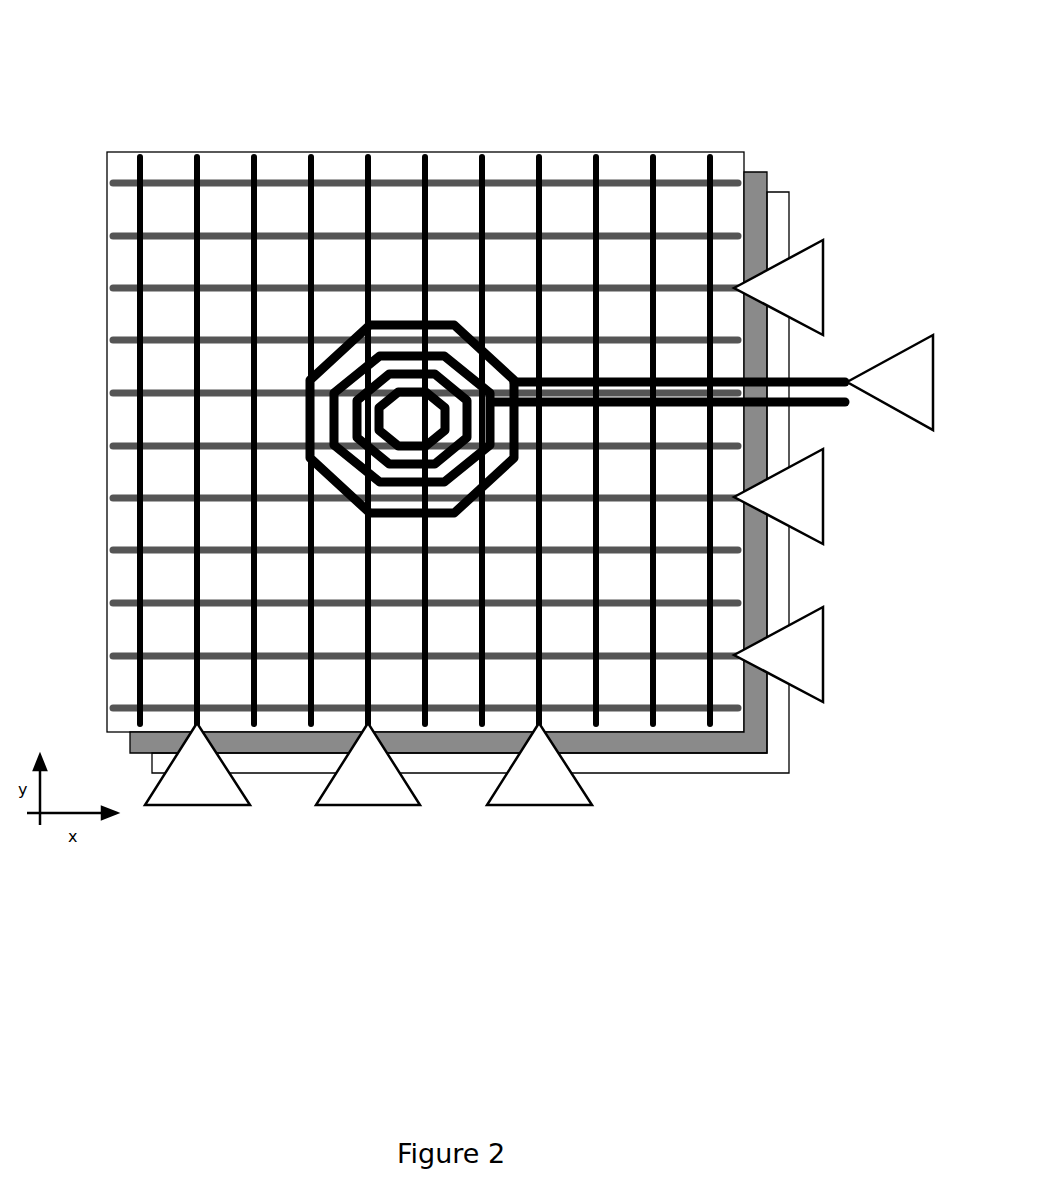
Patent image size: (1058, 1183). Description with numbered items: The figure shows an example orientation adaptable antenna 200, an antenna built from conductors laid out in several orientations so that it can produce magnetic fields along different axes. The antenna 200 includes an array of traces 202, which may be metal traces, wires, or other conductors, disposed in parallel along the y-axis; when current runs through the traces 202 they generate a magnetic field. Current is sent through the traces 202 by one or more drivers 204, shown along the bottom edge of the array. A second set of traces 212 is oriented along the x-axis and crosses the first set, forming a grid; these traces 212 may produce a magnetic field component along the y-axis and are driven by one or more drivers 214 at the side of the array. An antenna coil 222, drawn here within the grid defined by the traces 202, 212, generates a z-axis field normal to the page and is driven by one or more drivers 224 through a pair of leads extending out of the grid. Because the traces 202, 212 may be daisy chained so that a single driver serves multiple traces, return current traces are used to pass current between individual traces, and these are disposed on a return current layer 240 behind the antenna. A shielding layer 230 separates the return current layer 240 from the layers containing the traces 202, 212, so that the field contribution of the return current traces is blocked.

The orientation adaptable antenna 200 is at (104, 40).
The traces 202 is at (710, 152).
The traces 212 is at (113, 183).
The drivers 204 is at (368, 764).
The drivers 214 is at (778, 471).
The antenna coil 222 is at (364, 327).
The drivers 224 is at (712, 382).
The shielding layer 230 is at (758, 172).
The return current layer 240 is at (789, 206).